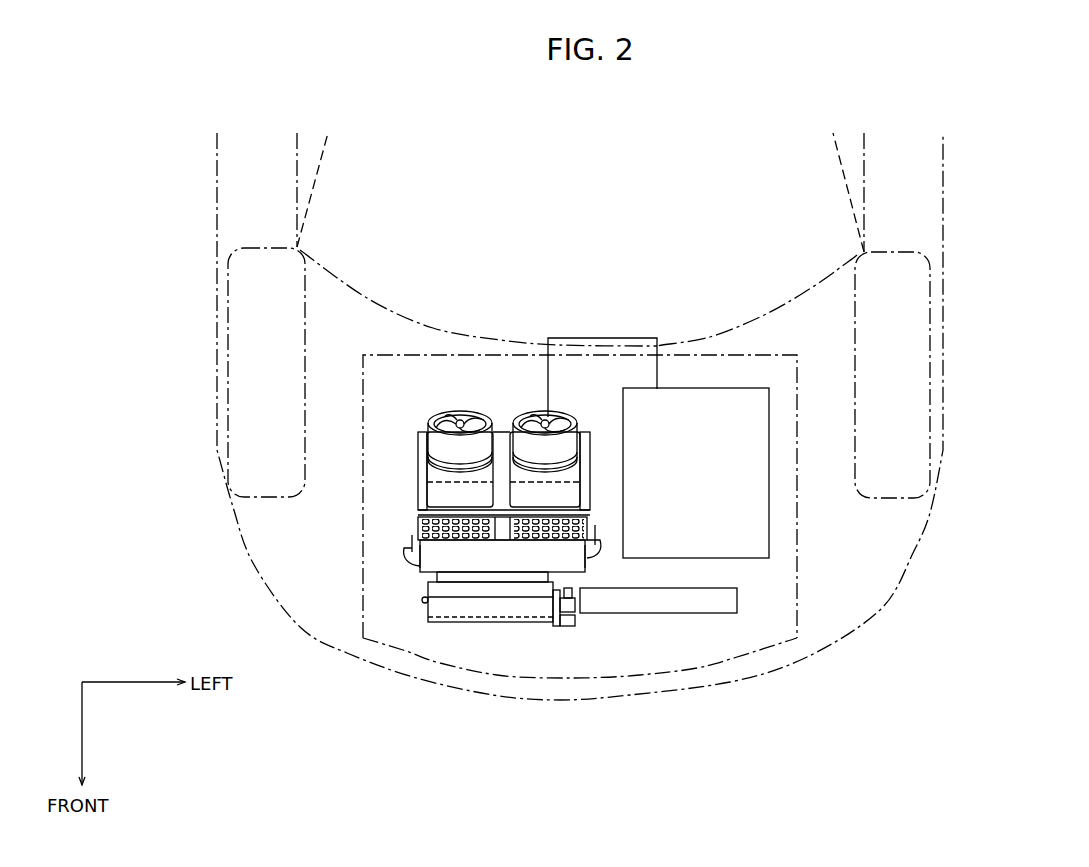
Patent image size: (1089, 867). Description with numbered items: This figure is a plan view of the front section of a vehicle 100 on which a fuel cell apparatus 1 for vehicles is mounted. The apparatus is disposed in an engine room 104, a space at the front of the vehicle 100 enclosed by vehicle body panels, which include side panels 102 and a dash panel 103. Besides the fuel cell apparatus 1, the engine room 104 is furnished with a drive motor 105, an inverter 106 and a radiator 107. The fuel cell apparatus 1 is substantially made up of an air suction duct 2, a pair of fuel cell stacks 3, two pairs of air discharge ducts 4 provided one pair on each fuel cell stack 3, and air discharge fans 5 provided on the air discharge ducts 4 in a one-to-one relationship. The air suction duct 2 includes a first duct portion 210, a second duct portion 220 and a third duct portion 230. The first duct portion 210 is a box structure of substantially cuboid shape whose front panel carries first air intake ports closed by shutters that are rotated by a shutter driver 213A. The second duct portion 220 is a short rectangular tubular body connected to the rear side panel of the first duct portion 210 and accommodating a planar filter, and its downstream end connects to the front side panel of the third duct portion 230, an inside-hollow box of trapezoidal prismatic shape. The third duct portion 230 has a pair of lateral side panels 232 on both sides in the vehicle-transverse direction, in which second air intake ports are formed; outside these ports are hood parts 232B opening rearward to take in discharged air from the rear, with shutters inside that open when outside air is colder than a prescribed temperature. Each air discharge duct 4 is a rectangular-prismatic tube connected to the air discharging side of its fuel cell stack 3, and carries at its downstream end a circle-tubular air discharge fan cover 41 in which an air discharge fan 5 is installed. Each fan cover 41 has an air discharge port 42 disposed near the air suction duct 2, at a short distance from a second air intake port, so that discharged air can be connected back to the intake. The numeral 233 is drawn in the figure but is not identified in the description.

The vehicle 100 is at (945, 203).
The side panels 102 is at (798, 563).
The dash panel 103 is at (687, 350).
The engine room 104 is at (372, 413).
The drive motor 105 is at (598, 338).
The inverter 106 is at (769, 472).
The radiator 107 is at (723, 603).
The fuel cell apparatus for vehicles 1 is at (503, 410).
The air suction duct 2 is at (415, 600).
The fuel cell stacks 3 is at (413, 518).
The air discharge ducts 4 is at (448, 487).
The air discharge fans 5 is at (452, 410).
The air discharge fan cover 41 is at (425, 458).
The air discharge port 42 is at (462, 420).
The first duct portion 210 is at (497, 610).
The shutter driver 213A is at (567, 614).
The second duct portion 220 is at (462, 575).
The third duct portion 230 is at (415, 568).
The lateral side panels 232 is at (587, 557).
The hood parts 232B is at (410, 549).
The reservoir tank 233 is at (523, 555).